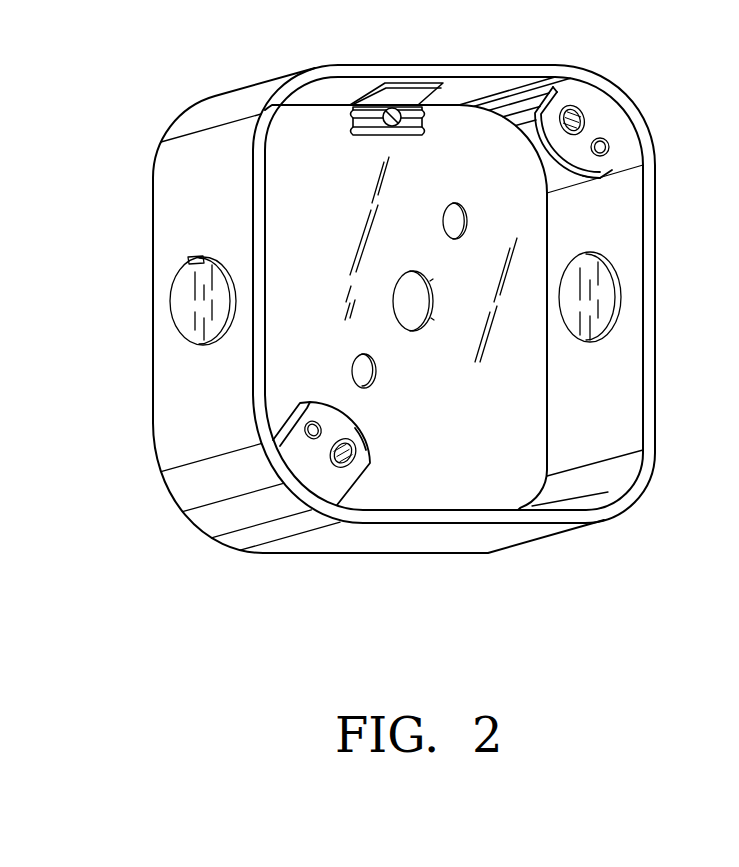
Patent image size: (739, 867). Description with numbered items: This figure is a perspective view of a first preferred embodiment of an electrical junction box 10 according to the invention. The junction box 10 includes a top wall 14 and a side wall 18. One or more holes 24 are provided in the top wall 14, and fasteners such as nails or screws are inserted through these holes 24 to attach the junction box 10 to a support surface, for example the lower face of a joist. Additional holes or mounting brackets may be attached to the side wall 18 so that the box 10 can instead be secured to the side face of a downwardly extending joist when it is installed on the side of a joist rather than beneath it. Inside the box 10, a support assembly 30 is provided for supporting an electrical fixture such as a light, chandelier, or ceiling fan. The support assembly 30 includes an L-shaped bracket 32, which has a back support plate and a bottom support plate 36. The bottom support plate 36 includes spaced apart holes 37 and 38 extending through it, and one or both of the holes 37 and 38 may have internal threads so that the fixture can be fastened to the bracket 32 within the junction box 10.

The junction box 10 is at (138, 327).
The top wall 14 is at (334, 221).
The side wall 18 is at (247, 150).
The hole 24 is at (370, 390).
The support assembly 30 is at (318, 393).
The L-shaped bracket 32 is at (634, 140).
The bottom support plate 36 is at (605, 163).
The hole 37 is at (583, 116).
The hole 38 is at (608, 145).